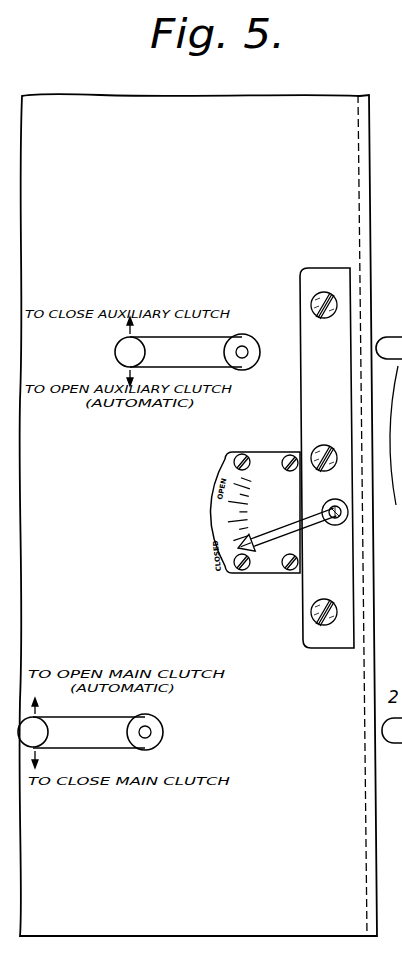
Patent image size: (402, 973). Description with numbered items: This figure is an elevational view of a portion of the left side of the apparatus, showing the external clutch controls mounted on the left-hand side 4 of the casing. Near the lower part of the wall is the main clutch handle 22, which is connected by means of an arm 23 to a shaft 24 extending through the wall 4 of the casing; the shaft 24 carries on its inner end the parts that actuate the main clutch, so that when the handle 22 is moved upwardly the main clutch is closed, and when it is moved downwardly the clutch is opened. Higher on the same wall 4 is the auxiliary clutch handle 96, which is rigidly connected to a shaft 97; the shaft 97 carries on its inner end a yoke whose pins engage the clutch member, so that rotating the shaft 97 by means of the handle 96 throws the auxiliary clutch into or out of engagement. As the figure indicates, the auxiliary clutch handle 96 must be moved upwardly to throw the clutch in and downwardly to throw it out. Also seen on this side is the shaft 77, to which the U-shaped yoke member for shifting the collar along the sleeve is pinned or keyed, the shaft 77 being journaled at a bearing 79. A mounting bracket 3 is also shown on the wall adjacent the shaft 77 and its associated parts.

The left-hand side 4 is at (340, 173).
The mounting bracket 3 is at (351, 463).
The shaft 77 is at (323, 506).
The journal 79 is at (393, 475).
The clutch handle 96 is at (116, 352).
The shaft 97 is at (249, 352).
The handle 22 is at (34, 733).
The arm 23 is at (108, 738).
The shaft 24 is at (146, 733).